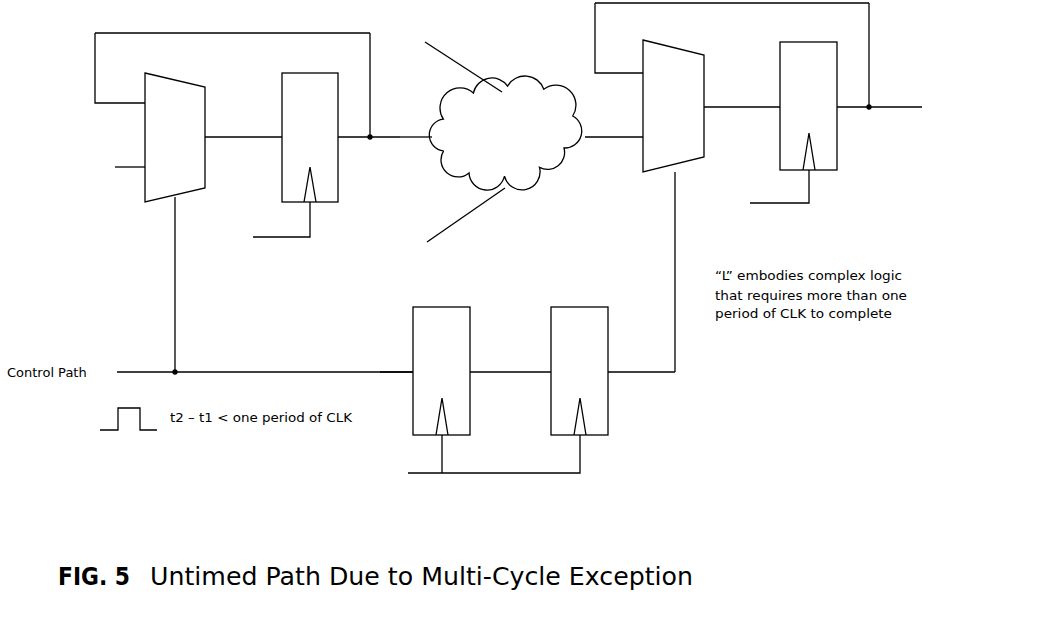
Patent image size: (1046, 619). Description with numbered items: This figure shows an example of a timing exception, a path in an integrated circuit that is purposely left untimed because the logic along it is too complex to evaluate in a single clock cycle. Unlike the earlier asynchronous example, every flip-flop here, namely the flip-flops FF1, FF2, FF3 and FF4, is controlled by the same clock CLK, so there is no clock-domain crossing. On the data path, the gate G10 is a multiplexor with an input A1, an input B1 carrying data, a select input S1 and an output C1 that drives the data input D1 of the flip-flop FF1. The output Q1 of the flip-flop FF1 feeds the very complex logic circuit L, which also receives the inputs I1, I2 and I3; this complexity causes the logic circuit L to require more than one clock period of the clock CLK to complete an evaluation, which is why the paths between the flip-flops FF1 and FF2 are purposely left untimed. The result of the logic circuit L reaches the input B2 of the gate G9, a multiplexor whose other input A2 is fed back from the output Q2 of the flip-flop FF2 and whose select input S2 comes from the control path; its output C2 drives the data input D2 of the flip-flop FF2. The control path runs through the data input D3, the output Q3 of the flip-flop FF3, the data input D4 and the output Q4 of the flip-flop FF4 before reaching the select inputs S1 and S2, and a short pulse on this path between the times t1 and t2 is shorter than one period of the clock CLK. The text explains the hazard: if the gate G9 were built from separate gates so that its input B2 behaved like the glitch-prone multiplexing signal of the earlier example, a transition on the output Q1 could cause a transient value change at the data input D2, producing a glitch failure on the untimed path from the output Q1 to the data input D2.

The gate G10 is at (175, 137).
The gate G9 is at (673, 106).
The flip-flop FF1 is at (310, 137).
The flip-flop FF2 is at (808, 106).
The flip-flop FF3 is at (441, 371).
The flip-flop FF4 is at (579, 371).
The logic circuit L is at (505, 133).
The input I1 is at (452, 65).
The input I2 is at (416, 129).
The input I3 is at (454, 219).
The input A1 is at (232, 79).
The input B1 is at (106, 175).
The output C1 is at (225, 147).
The select input S1 is at (186, 284).
The data input D1 is at (263, 128).
The output Q1 is at (369, 96).
The input A2 is at (732, 49).
The input B2 is at (614, 146).
The output C2 is at (723, 117).
The select input S2 is at (686, 271).
The data input D2 is at (761, 117).
The output Q2 is at (879, 67).
The data input D3 is at (396, 383).
The output Q3 is at (490, 383).
The data input D4 is at (530, 383).
The output Q4 is at (641, 383).
The clock CLK is at (510, 326).
The time t1 of control pulse t1 is at (114, 405).
The time t2 of control pulse t2 is at (143, 405).